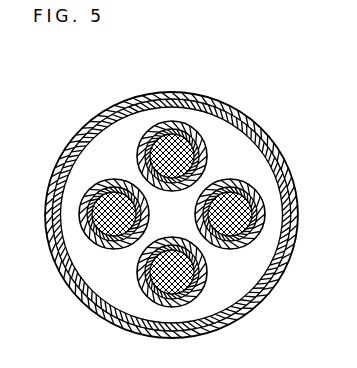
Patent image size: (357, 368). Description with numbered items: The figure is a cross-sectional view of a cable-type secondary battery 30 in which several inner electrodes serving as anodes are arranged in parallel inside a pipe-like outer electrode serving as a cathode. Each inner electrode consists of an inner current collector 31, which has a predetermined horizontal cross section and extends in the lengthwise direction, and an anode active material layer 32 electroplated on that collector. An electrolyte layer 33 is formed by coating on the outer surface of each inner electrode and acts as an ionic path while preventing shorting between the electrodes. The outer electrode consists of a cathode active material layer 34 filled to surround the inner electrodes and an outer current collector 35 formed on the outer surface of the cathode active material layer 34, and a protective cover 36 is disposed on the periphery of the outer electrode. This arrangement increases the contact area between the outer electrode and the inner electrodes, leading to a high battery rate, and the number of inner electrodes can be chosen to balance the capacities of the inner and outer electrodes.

The cable-type secondary battery 30 is at (74, 116).
The inner current collector 31 is at (175, 136).
The anode active material layer 32 is at (182, 133).
The electrolyte layer 33 is at (195, 127).
The cathode active material layer 34 is at (269, 157).
The outer current collector 35 is at (270, 150).
The protective cover 36 is at (262, 130).